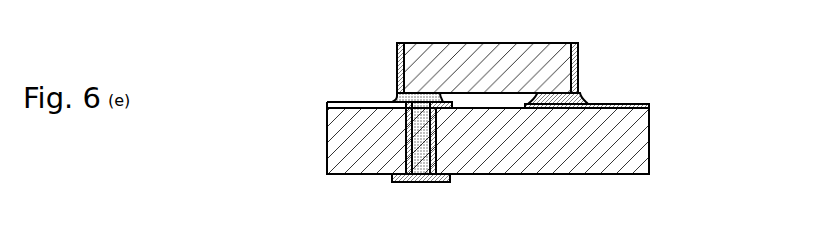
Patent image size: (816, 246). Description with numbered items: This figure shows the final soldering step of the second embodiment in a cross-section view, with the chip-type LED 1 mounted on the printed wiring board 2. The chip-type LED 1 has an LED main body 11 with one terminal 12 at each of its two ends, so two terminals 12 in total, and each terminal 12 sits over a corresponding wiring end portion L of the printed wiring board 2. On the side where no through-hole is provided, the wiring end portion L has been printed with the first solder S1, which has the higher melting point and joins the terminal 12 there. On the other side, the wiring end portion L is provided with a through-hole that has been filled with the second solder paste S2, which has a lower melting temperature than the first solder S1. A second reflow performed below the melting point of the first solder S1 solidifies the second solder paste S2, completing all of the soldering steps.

The chip-type LED 1 is at (505, 46).
The printed wiring board 2 is at (594, 183).
The LED main body 11 is at (488, 43).
The terminal 12 is at (397, 66).
The wiring end portion L is at (340, 101).
The first solder S1 is at (584, 100).
The second solder paste S2 is at (423, 182).